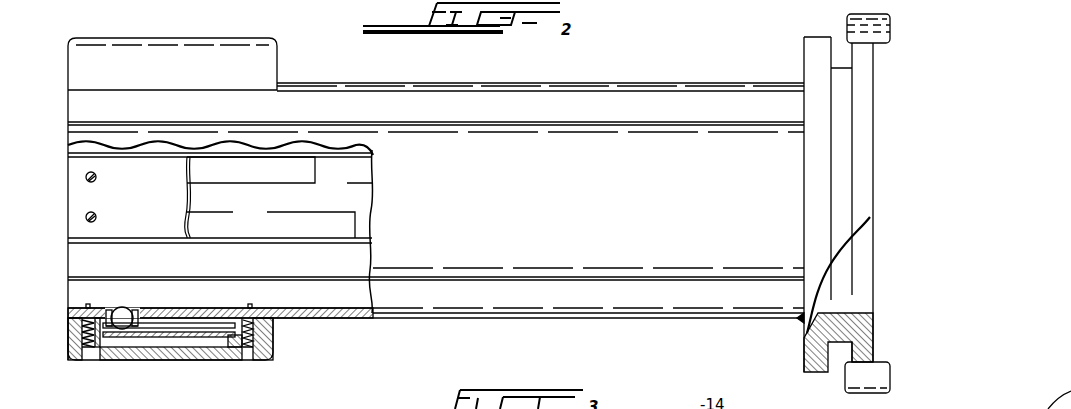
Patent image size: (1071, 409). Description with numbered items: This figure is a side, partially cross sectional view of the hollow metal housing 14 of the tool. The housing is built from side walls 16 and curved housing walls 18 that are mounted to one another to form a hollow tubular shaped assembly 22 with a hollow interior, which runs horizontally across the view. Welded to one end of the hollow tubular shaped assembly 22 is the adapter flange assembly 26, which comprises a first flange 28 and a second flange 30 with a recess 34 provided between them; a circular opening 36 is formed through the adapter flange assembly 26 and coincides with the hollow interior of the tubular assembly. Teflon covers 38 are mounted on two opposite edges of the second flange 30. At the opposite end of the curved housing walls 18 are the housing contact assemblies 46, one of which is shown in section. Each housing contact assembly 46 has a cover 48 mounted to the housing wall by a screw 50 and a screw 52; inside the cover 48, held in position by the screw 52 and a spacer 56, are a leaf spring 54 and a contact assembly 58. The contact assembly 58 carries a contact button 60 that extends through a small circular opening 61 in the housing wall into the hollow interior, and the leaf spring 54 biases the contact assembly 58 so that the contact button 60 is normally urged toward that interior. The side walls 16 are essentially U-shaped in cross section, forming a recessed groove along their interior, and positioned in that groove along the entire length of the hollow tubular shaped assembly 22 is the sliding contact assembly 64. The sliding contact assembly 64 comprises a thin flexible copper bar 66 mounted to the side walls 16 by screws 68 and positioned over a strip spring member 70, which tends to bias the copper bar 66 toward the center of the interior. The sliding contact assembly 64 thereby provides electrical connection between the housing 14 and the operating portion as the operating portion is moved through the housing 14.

The hollow metal housing 14 is at (673, 52).
The side walls 16 is at (632, 212).
The curved housing walls 18 is at (575, 83).
The hollow tubular shaped assembly 22 is at (455, 318).
The adapter flange assembly 26 is at (826, 30).
The first flange 28 is at (804, 355).
The second flange 30 is at (873, 353).
The recess 34 is at (838, 43).
The circular opening 36 is at (852, 280).
The Teflon covers 38 is at (890, 30).
The housing contact assemblies 46 is at (281, 52).
The cover 48 is at (78, 360).
The screw 50 is at (88, 306).
The screw 52 is at (255, 306).
The leaf spring 54 is at (190, 332).
The spacer 56 is at (275, 330).
The contact assembly 58 is at (152, 323).
The contact button 60 is at (122, 306).
The small circular opening 61 is at (138, 310).
The sliding contact assembly 64 is at (133, 172).
The thin flexible copper bar 66 is at (150, 214).
The screws 68 is at (85, 215).
The strip spring member 70 is at (345, 206).